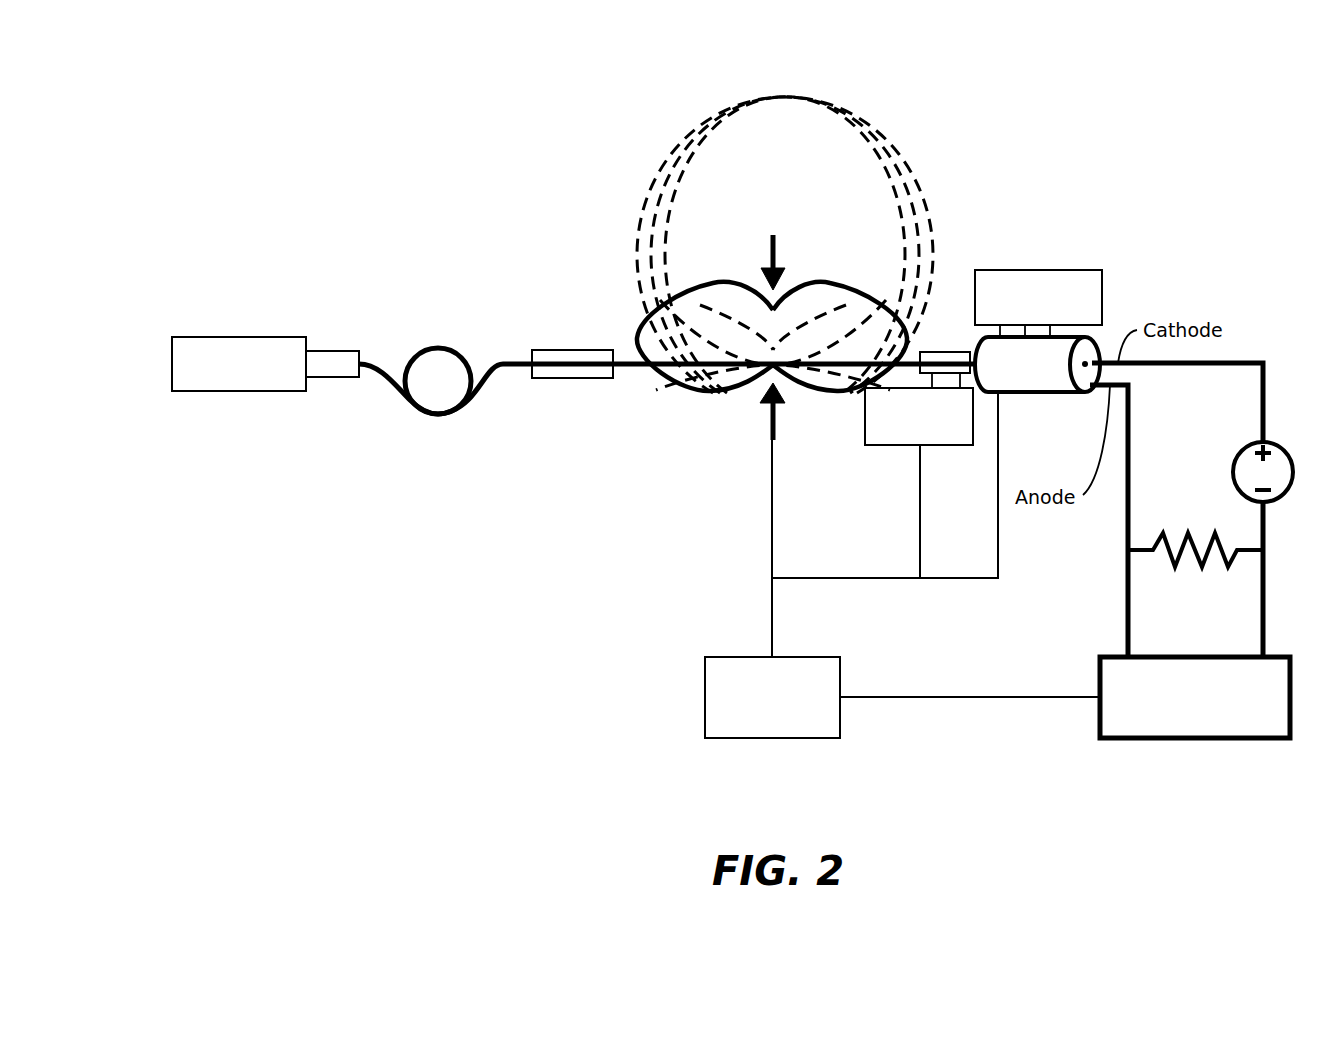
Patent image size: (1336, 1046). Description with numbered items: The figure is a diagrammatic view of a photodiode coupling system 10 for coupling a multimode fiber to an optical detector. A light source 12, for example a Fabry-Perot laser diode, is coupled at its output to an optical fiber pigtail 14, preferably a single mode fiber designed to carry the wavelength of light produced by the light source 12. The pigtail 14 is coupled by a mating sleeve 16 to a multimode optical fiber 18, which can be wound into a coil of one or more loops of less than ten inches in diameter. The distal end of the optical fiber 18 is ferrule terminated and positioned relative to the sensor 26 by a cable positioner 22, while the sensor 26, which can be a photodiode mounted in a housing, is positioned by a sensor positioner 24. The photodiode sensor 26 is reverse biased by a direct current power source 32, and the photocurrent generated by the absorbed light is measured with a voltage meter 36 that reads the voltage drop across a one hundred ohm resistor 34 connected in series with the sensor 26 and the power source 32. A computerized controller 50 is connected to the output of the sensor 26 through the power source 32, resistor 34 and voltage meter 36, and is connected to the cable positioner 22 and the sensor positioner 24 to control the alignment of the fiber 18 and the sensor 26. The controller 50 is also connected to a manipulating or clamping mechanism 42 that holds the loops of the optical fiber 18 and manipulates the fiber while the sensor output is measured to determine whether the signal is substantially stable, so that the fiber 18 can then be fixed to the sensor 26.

The photodiode coupling system 10 is at (413, 152).
The light source 12 is at (280, 337).
The optical fiber pigtail 14 is at (438, 347).
The mating sleeve 16 is at (586, 350).
The multimode optical fiber 18 is at (680, 130).
The manipulating or clamping mechanism 42 is at (772, 235).
The sensor positioner 24 is at (1075, 270).
The cable positioner 22 is at (892, 447).
The sensor 26 is at (1078, 393).
The direct current power source 32 is at (1295, 470).
The resistor 34 is at (1160, 533).
The voltage meter 36 is at (1098, 670).
The controller 50 is at (902, 589).